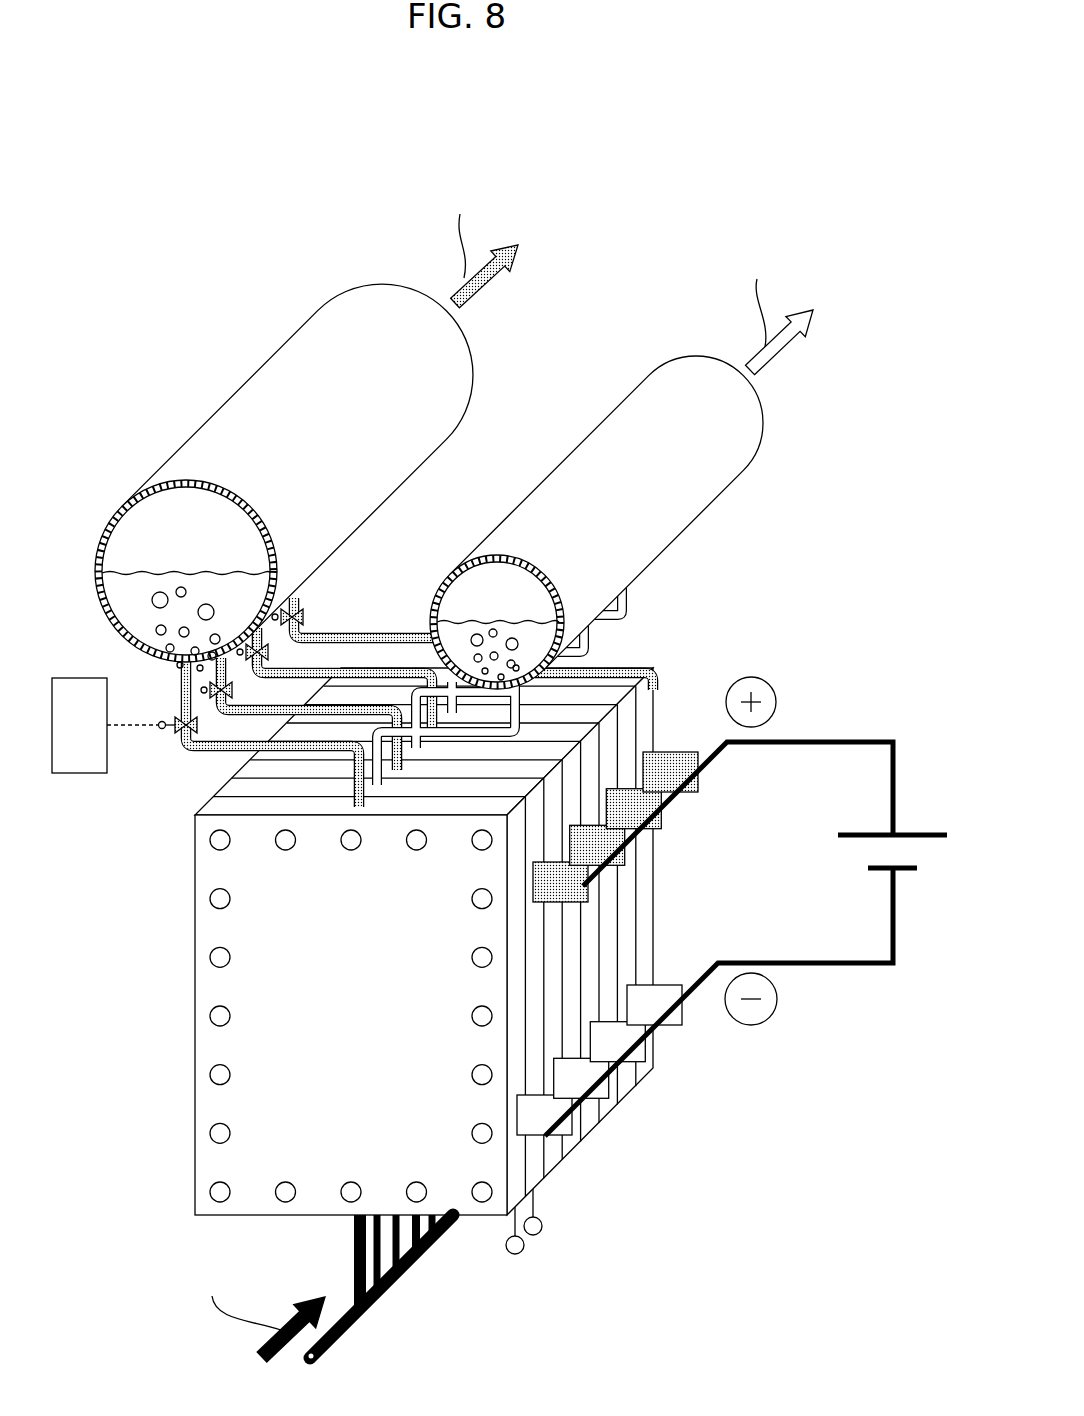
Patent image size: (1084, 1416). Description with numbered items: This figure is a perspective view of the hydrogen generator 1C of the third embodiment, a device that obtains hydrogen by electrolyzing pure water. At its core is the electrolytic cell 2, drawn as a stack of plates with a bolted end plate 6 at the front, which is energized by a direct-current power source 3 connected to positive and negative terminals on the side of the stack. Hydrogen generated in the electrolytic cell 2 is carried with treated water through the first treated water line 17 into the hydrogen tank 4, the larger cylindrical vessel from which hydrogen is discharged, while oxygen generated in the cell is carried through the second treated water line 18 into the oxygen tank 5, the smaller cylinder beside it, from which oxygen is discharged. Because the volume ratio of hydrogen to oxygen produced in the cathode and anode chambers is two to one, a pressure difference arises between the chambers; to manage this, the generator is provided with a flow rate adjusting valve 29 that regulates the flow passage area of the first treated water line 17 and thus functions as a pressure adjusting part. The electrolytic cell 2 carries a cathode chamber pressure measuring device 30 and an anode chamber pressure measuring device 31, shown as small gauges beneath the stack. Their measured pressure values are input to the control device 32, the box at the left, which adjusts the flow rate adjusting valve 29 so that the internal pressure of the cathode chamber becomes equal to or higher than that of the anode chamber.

The hydrogen generator 1C is at (170, 252).
The electrolytic cell 2 is at (662, 658).
The direct-current power source 3 is at (898, 830).
The hydrogen tank 4 is at (232, 427).
The oxygen tank 5 is at (706, 468).
The end plate 6 is at (188, 999).
The first treated water line 17 is at (170, 845).
The second treated water line 18 is at (627, 600).
The flow rate adjusting valve 29 is at (180, 740).
The cathode chamber pressure measuring device 30 is at (517, 1256).
The anode chamber pressure measuring device 31 is at (541, 1238).
The control device 32 is at (79, 775).